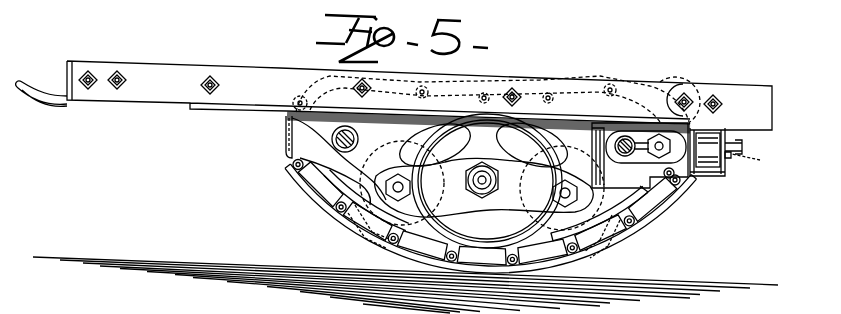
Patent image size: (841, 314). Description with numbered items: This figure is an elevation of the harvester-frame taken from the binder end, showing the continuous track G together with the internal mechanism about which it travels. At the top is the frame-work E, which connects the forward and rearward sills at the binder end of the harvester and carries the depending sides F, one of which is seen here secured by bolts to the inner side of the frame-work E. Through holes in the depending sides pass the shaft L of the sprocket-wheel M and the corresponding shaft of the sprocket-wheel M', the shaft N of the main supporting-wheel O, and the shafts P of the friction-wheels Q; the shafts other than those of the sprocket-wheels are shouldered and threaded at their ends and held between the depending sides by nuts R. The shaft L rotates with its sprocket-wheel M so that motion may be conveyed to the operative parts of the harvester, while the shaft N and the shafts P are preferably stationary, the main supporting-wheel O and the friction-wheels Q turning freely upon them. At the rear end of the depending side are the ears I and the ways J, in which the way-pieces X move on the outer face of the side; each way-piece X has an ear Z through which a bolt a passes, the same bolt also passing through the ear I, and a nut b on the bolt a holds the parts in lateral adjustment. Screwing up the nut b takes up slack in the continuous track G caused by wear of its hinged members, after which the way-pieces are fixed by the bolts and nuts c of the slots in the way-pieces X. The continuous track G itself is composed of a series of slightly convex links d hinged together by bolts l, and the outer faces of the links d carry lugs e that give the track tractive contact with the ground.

The frame-work E is at (419, 95).
The ear Z is at (713, 130).
The main supporting-wheel O is at (487, 181).
The depending side F is at (483, 144).
The shaft of main supporting-wheel N is at (484, 187).
The nut R is at (482, 185).
The shaft of sprocket-wheel L is at (290, 152).
The sprocket-wheel M is at (327, 160).
The sprocket-wheel M' is at (615, 214).
The continuous track G is at (690, 196).
The way-piece X is at (664, 196).
The bolt and nut c is at (674, 177).
The ear I is at (726, 164).
The way J is at (718, 176).
The nut b is at (742, 147).
The bolt a is at (748, 160).
The lug e is at (398, 247).
The link d is at (286, 130).
The bolt l is at (292, 164).
The shaft of friction-wheel P is at (360, 222).
The friction-wheel Q is at (372, 240).